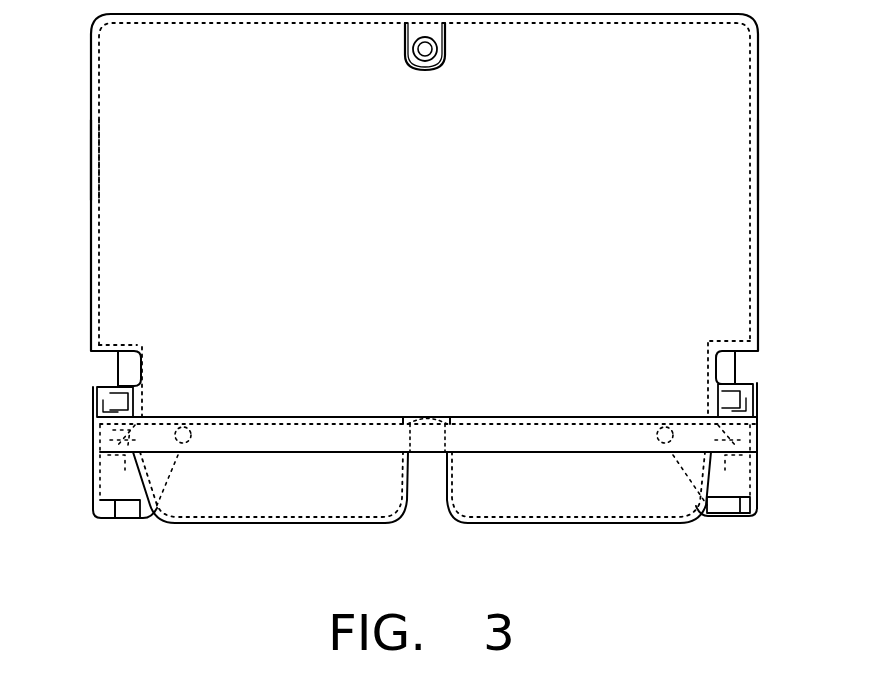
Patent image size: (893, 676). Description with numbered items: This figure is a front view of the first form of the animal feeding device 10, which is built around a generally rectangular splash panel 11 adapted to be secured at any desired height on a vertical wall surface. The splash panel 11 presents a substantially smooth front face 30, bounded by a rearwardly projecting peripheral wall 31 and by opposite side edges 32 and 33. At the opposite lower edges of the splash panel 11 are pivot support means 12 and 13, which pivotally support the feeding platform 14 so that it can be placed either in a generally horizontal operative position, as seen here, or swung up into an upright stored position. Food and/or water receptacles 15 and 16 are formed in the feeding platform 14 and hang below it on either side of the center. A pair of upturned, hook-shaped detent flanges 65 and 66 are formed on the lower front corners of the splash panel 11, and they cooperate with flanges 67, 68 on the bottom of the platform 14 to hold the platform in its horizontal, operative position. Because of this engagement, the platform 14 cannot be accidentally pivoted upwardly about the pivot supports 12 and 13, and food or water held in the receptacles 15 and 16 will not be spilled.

The animal feeding device 10 is at (636, 528).
The splash panel 11 is at (763, 84).
The pivot support means 12 is at (117, 385).
The pivot support means 13 is at (733, 352).
The feeding platform 14 is at (330, 423).
The food and/or water receptacle 15 is at (272, 520).
The food and/or water receptacle 16 is at (547, 521).
The front face 30 is at (680, 187).
The peripheral wall 31 is at (100, 172).
The side edge 32 is at (91, 182).
The side edge 33 is at (758, 177).
The detent flange 65 is at (128, 505).
The detent flange 66 is at (720, 514).
The flange 67 is at (107, 517).
The flange 68 is at (745, 514).